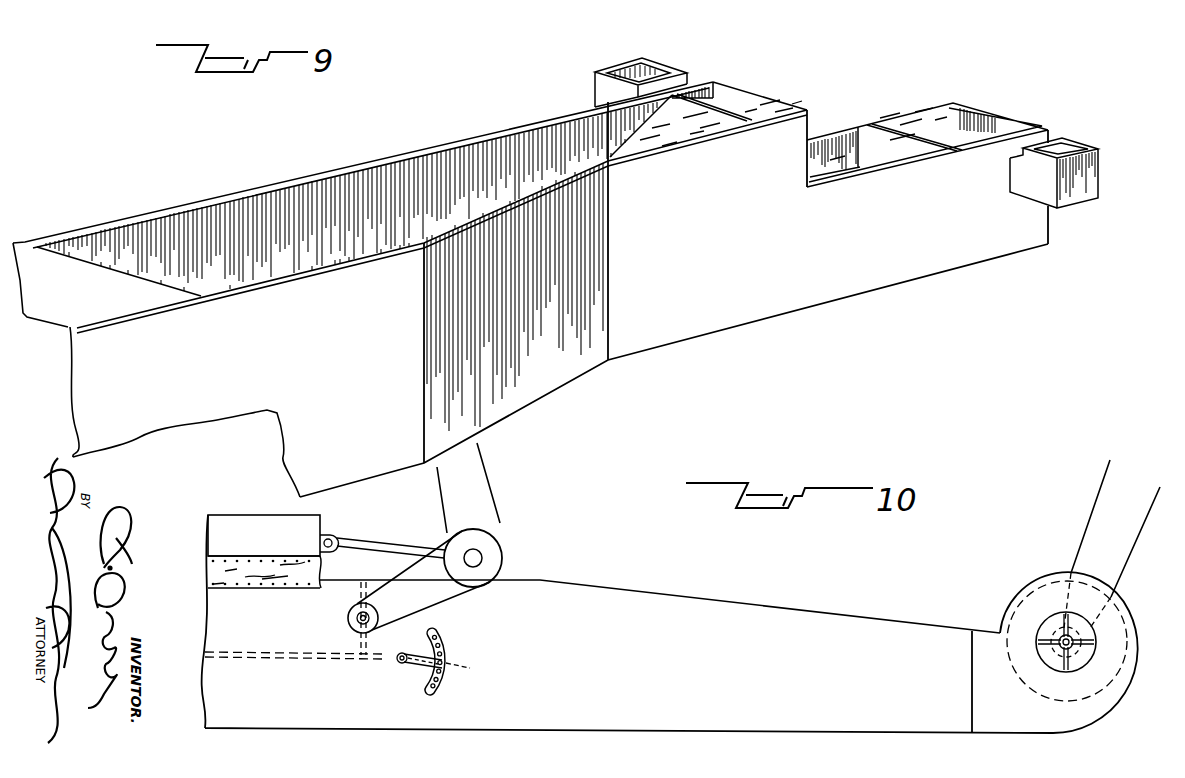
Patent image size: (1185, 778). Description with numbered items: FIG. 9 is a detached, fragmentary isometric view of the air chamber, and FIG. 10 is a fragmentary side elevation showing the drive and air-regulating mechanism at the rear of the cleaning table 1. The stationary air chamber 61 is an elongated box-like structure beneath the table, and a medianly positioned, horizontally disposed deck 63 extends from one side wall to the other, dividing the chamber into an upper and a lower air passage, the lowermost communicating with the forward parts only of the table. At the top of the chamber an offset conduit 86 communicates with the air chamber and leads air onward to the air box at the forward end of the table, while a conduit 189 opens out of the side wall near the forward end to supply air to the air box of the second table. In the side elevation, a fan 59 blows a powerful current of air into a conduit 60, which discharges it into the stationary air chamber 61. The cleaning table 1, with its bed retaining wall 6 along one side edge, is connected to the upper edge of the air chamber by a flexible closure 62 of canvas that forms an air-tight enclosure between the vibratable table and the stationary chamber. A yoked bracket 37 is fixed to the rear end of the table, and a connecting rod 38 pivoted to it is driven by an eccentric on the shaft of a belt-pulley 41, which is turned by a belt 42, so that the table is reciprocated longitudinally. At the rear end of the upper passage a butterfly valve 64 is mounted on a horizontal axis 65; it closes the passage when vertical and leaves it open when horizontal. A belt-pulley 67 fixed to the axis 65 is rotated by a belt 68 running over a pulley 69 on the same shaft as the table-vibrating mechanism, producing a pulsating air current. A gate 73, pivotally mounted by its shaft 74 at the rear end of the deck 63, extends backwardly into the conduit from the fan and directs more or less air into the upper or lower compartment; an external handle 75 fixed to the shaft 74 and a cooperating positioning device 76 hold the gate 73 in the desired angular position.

In FIG. 10, the cleaning table 1 is at (317, 509).
In FIG. 10, the bed retaining wall 6 is at (221, 516).
In FIG. 10, the yoked bracket 37 is at (321, 526).
In FIG. 10, the connecting rod 38 is at (371, 537).
In FIG. 10, the belt-pulley 41 is at (461, 530).
In FIG. 10, the belt 42 is at (484, 477).
In FIG. 10, the fan 59 is at (1012, 595).
In FIG. 10, the conduit 60 is at (740, 597).
In FIG. 9, the stationary air chamber 61 is at (302, 229).
In FIG. 10, the stationary air chamber 61 is at (197, 669).
In FIG. 10, the flexible closure 62 is at (314, 559).
In FIG. 9, the deck 63 is at (240, 250).
In FIG. 10, the deck 63 is at (242, 644).
In FIG. 10, the butterfly valve 64 is at (352, 582).
In FIG. 10, the horizontal axis 65 is at (349, 613).
In FIG. 10, the belt-pulley 67 is at (344, 607).
In FIG. 10, the belt 68 is at (430, 588).
In FIG. 10, the pulley 69 is at (474, 550).
In FIG. 10, the gate 73 is at (460, 653).
In FIG. 10, the shaft 74 is at (392, 655).
In FIG. 10, the external handle 75 is at (408, 661).
In FIG. 10, the positioning device 76 is at (436, 671).
In FIG. 9, the offset conduit 86 is at (632, 64).
In FIG. 9, the conduit 189 is at (1078, 170).